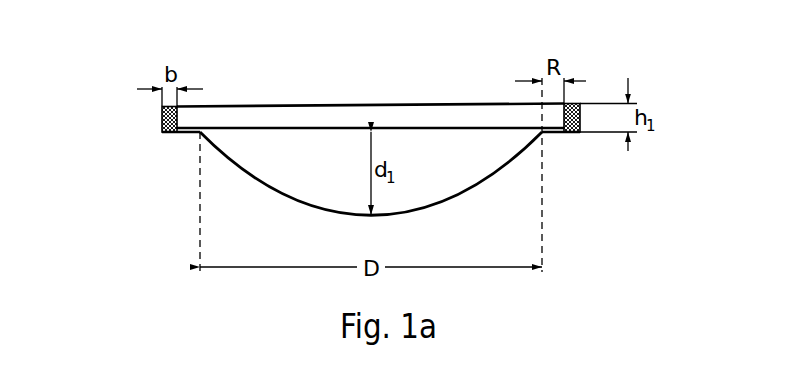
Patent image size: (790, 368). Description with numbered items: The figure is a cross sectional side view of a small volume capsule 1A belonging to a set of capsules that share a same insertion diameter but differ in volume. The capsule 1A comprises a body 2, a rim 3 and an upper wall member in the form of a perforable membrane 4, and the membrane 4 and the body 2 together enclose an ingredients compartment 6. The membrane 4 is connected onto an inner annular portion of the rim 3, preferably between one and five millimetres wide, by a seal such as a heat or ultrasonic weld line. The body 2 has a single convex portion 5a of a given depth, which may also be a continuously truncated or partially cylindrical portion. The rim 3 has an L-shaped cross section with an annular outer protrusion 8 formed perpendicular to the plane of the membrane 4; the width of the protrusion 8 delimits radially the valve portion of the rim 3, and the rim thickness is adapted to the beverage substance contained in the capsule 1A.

The capsule 1A is at (145, 64).
The body 2 is at (475, 188).
The rim 3 is at (553, 133).
The perforable membrane 4 is at (470, 127).
The convex portion 5a is at (289, 200).
The ingredients compartment 6 is at (297, 142).
The annular outer protrusion 8 is at (580, 112).